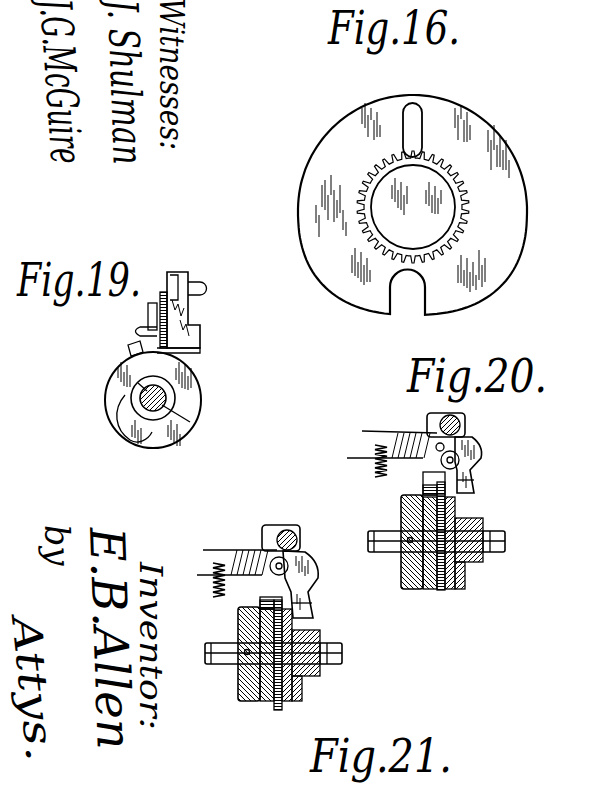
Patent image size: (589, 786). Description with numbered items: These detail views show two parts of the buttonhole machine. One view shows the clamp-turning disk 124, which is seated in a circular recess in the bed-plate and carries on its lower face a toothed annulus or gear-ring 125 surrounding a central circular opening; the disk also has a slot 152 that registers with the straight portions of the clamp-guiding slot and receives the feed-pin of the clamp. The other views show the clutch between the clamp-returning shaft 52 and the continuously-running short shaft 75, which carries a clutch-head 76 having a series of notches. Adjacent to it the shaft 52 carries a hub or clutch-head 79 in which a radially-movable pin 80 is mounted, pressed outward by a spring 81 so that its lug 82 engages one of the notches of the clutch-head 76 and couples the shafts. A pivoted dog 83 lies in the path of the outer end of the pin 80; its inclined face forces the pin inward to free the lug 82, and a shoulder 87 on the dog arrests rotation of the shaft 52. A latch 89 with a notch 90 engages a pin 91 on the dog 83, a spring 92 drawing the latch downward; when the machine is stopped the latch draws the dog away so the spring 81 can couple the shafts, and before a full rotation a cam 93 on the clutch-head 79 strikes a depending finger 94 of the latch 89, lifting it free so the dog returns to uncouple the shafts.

In FIG. 16, the clamp-turning disk 124 is at (412, 205).
In FIG. 16, the toothed annulus or gear-ring 125 is at (453, 172).
In FIG. 16, the slot 152 is at (417, 113).
In FIG. 19, the clamp-returning shaft 52 is at (145, 410).
In FIG. 20, the clamp-returning shaft 52 is at (505, 547).
In FIG. 21, the clamp-returning shaft 52 is at (342, 655).
In FIG. 20, the short shaft 75 is at (398, 552).
In FIG. 21, the short shaft 75 is at (230, 664).
In FIG. 20, the clutch-head 76 is at (405, 512).
In FIG. 21, the clutch-head 76 is at (240, 622).
In FIG. 19, the hub or clutch-head 79 is at (183, 383).
In FIG. 20, the hub or clutch-head 79 is at (455, 510).
In FIG. 21, the hub or clutch-head 79 is at (298, 625).
In FIG. 19, the radially-movable pin 80 is at (128, 348).
In FIG. 20, the radially-movable pin 80 is at (445, 488).
In FIG. 21, the radially-movable pin 80 is at (298, 584).
In FIG. 20, the spring 81 is at (440, 590).
In FIG. 21, the spring 81 is at (273, 705).
In FIG. 20, the lug 82 is at (423, 490).
In FIG. 21, the lug 82 is at (285, 597).
In FIG. 19, the pivoted dog 83 is at (188, 311).
In FIG. 20, the pivoted dog 83 is at (430, 415).
In FIG. 21, the pivoted dog 83 is at (263, 545).
In FIG. 19, the shoulder 87 is at (175, 352).
In FIG. 20, the latch 89 is at (392, 444).
In FIG. 21, the latch 89 is at (212, 550).
In FIG. 20, the notch 90 is at (437, 445).
In FIG. 19, the pin 91 is at (148, 312).
In FIG. 20, the pin 91 is at (456, 457).
In FIG. 21, the pin 91 is at (287, 563).
In FIG. 20, the spring 92 is at (364, 466).
In FIG. 21, the spring 92 is at (203, 587).
In FIG. 19, the cam 93 is at (165, 422).
In FIG. 20, the cam 93 is at (465, 580).
In FIG. 21, the cam 93 is at (300, 690).
In FIG. 19, the depending finger 94 is at (140, 331).
In FIG. 20, the depending finger 94 is at (457, 492).
In FIG. 21, the depending finger 94 is at (305, 610).